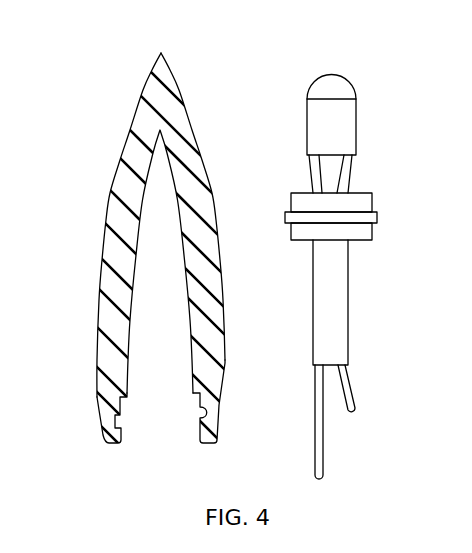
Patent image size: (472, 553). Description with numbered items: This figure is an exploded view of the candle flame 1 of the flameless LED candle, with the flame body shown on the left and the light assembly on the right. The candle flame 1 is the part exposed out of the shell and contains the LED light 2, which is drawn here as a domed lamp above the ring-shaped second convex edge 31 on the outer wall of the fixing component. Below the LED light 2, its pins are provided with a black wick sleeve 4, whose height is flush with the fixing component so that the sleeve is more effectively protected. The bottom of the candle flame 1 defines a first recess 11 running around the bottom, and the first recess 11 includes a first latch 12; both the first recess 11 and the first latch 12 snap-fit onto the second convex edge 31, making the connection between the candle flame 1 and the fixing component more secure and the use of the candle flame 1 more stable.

The candle flame 1 is at (117, 267).
The first recess 11 is at (102, 402).
The first latch 12 is at (212, 412).
The LED light 2 is at (353, 112).
The second convex edge 31 is at (373, 217).
The black wick sleeve 4 is at (343, 340).